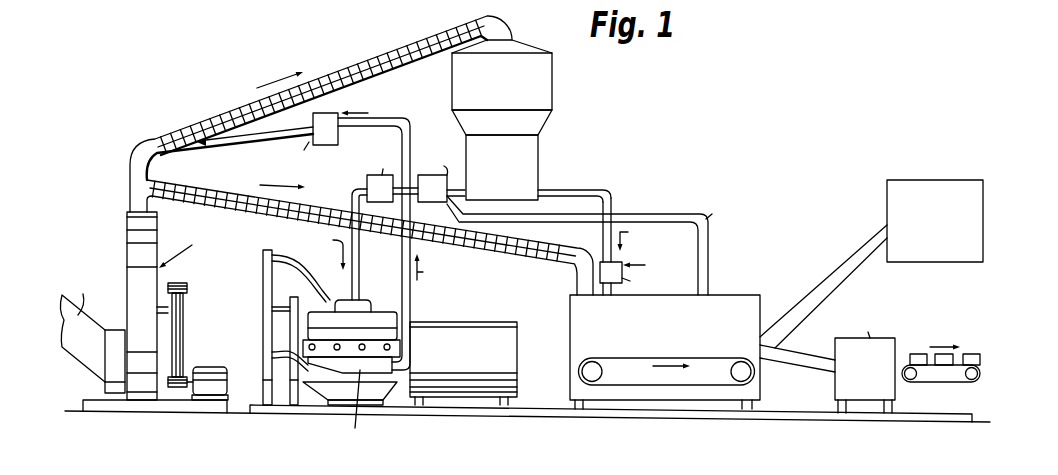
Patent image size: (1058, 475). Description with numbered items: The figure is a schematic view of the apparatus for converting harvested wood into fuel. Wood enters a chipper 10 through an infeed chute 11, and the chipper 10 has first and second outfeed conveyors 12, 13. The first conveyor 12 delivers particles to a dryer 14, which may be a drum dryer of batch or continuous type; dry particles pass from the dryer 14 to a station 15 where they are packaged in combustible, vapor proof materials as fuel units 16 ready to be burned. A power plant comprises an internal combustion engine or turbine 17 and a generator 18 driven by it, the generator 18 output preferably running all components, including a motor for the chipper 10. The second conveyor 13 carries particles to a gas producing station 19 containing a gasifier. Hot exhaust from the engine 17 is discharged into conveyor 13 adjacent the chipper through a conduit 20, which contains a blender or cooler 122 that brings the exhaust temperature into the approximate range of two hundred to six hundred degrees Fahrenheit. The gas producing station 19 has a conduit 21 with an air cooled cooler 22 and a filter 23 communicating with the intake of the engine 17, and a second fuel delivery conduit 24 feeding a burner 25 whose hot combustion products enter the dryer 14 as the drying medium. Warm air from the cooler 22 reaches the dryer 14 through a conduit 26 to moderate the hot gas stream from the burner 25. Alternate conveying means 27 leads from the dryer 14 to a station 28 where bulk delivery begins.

The chipper 10 is at (159, 298).
The infeed chute 11 is at (93, 365).
The first outfeed conveyor 12 is at (558, 264).
The second outfeed conveyor 13 is at (177, 128).
The dryer 14 is at (702, 330).
The station 15 is at (833, 387).
The fuel units 16 is at (973, 352).
The internal combustion engine or turbine 17 is at (323, 393).
The generator 18 is at (472, 390).
The gas producing station 19 is at (525, 120).
The conduit 20 is at (411, 297).
The conduit 21 is at (357, 296).
The cooler 22 is at (448, 187).
The filter 23 is at (367, 179).
The second fuel delivery conduit 24 is at (599, 190).
The burner 25 is at (604, 258).
The conduit 26 is at (668, 213).
The alternate conveying means 27 is at (843, 272).
The station 28 is at (952, 180).
The blender or cooler 122 is at (333, 113).